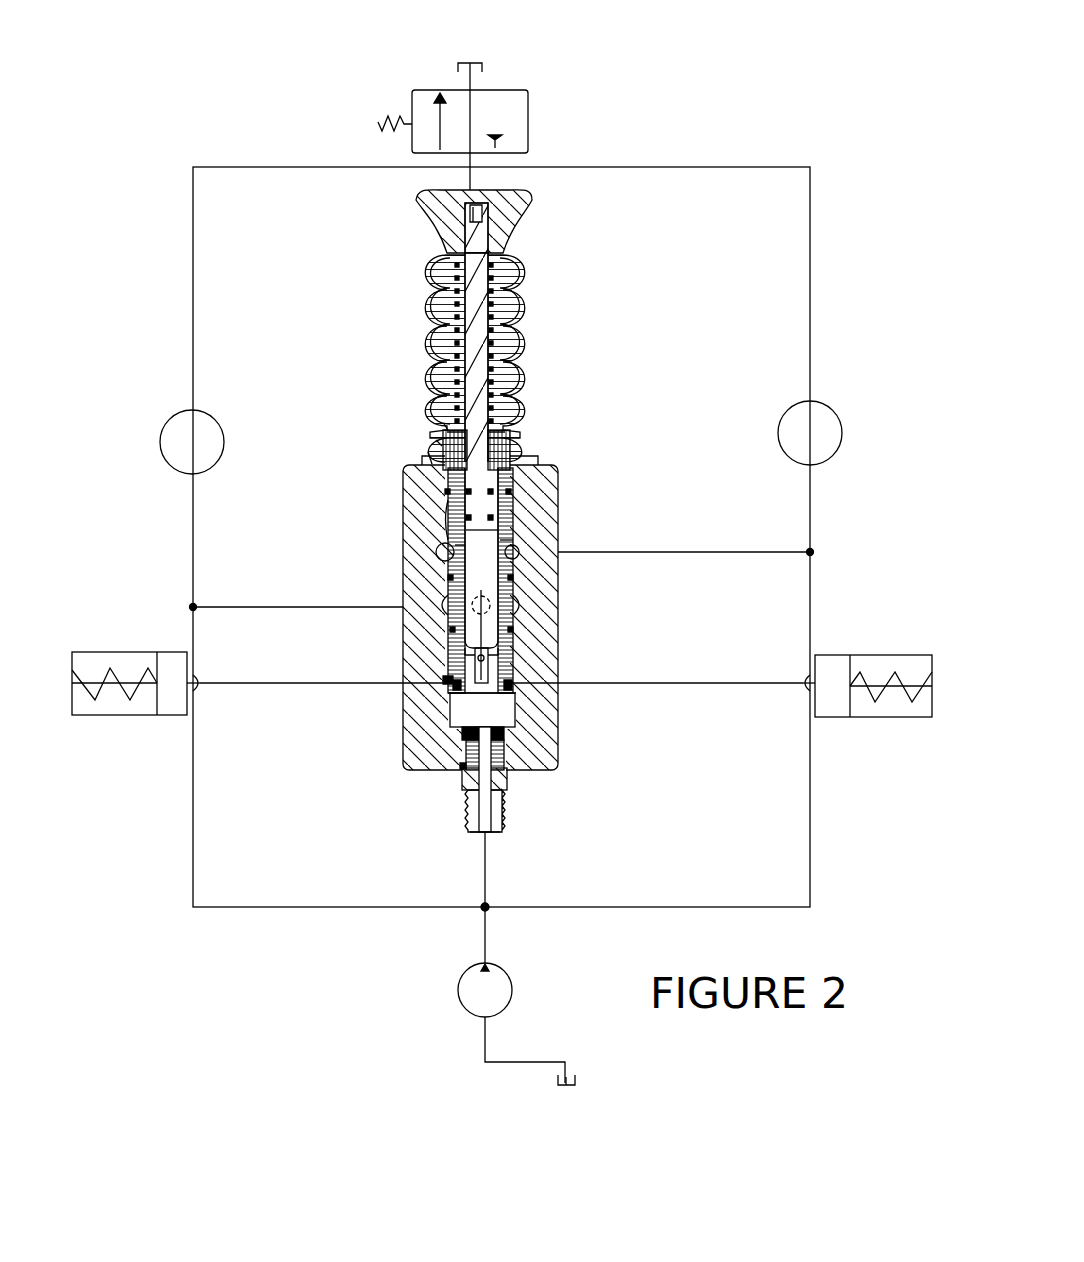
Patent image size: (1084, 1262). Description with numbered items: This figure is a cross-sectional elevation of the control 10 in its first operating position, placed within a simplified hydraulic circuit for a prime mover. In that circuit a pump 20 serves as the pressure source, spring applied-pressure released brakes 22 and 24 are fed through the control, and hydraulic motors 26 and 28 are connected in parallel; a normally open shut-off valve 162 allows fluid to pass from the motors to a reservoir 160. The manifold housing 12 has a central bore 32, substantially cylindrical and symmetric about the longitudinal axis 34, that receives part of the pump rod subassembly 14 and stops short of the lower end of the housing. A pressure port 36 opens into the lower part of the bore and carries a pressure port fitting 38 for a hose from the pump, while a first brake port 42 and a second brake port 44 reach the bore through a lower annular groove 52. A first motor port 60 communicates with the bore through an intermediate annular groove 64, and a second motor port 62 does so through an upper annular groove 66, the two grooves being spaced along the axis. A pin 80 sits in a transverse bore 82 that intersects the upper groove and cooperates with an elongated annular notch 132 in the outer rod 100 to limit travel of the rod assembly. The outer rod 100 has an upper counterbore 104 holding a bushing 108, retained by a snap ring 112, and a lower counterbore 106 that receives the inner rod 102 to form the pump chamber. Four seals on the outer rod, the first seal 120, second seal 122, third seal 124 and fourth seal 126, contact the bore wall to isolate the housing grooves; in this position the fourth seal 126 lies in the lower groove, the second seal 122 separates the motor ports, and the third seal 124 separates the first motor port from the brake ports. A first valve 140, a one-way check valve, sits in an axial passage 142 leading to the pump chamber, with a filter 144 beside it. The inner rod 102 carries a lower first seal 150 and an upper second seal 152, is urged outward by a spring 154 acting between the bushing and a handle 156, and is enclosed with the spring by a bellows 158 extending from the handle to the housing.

The control 10 is at (682, 318).
The manifold housing 12 is at (550, 737).
The pump rod subassembly 14 is at (566, 402).
The pump 20 is at (470, 1003).
The brake 22 is at (138, 716).
The brake 24 is at (885, 718).
The hydraulic motor 26 is at (176, 463).
The hydraulic motor 28 is at (830, 455).
The central bore 32 is at (462, 722).
The longitudinal axis 34 is at (491, 787).
The pressure port 36 is at (458, 772).
The pressure port fitting 38 is at (470, 830).
The first brake port 42 is at (478, 693).
The second brake port 44 is at (518, 688).
The lower annular groove 52 is at (520, 680).
The first motor port 60 is at (405, 629).
The second motor port 62 is at (519, 556).
The intermediate annular groove 64 is at (518, 607).
The upper annular groove 66 is at (516, 545).
The pin 80 is at (468, 558).
The transverse bore 82 is at (436, 553).
The outer rod 100 is at (520, 450).
The inner rod 102 is at (500, 265).
The upper counterbore 104 is at (430, 452).
The lower counterbore 106 is at (478, 633).
The bushing 108 is at (440, 440).
The snap ring 112 is at (447, 427).
The first seal 120 is at (445, 491).
The second seal 122 is at (446, 578).
The third seal 124 is at (514, 629).
The fourth seal 126 is at (442, 679).
The elongated annular notch 132 is at (446, 522).
The first valve 140 is at (490, 666).
The axial passage 142 is at (484, 655).
The filter 144 is at (462, 704).
The first seal 150 is at (514, 517).
The second seal 152 is at (514, 491).
The spring 154 is at (515, 338).
The handle 156 is at (500, 232).
The bellows 158 is at (428, 308).
The reservoir 160 is at (474, 62).
The shut-off valve 162 is at (518, 107).